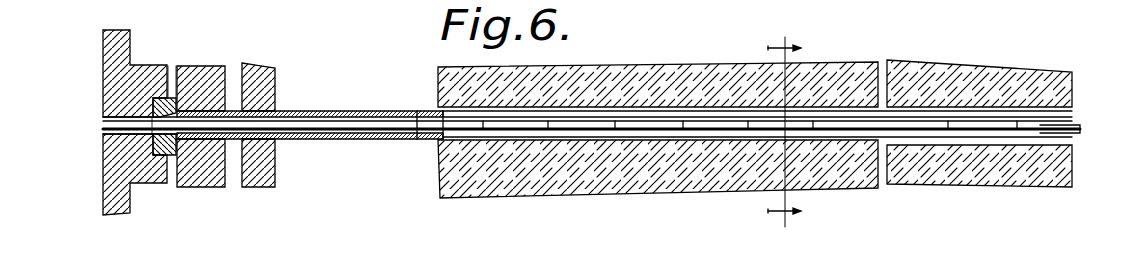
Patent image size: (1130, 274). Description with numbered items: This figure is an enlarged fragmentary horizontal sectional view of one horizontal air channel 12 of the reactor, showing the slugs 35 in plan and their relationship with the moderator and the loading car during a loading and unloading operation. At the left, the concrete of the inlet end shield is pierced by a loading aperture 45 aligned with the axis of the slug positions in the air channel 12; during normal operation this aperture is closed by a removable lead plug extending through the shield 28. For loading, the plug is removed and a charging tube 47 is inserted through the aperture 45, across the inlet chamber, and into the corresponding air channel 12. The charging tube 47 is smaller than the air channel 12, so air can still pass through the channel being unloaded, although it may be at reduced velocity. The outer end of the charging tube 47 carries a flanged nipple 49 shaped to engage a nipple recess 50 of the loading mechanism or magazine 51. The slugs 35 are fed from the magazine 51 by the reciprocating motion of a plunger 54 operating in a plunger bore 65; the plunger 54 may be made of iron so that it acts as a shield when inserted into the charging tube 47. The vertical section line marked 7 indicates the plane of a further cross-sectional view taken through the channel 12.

The air channel 12 is at (1076, 90).
The shield 28 is at (252, 63).
The slug 35 is at (1048, 131).
The loading aperture 45 is at (282, 111).
The charging tube 47 is at (345, 112).
The flanged nipple 49 is at (170, 98).
The nipple recess 50 is at (152, 128).
The loading mechanism or magazine 51 is at (121, 217).
The plunger 54 is at (151, 132).
The plunger bore 65 is at (137, 135).
The section line 7- 7 is at (784, 130).